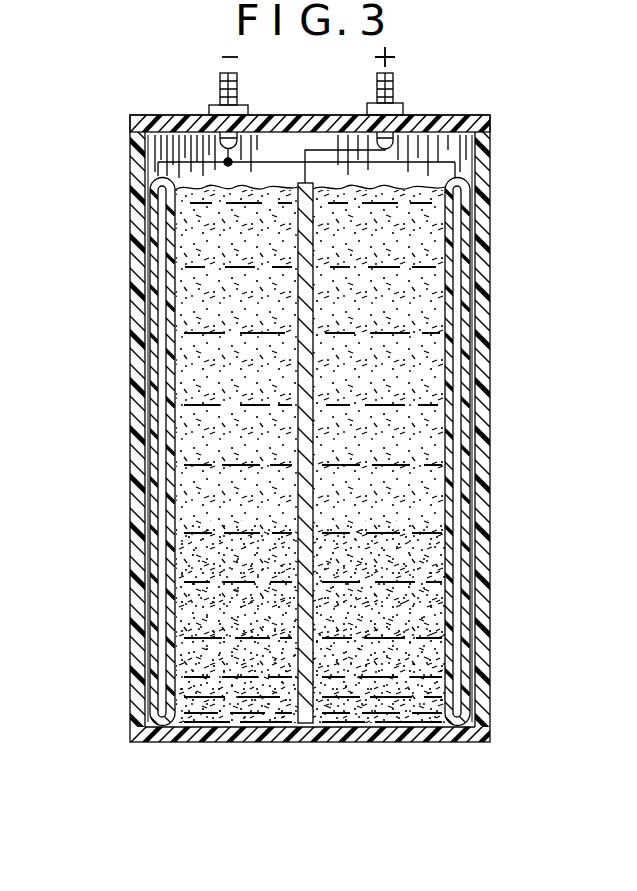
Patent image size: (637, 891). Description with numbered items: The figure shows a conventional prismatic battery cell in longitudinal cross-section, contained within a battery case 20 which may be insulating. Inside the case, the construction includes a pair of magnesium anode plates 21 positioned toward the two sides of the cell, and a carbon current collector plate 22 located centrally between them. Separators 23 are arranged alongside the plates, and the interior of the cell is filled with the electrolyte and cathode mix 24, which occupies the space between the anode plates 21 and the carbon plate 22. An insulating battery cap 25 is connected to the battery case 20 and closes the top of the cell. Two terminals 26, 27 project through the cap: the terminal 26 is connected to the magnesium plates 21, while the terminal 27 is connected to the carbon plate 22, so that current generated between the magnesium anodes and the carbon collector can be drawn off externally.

The battery case 20 is at (201, 742).
The magnesium anode plates 21 is at (167, 517).
The carbon current collector plate 22 is at (332, 700).
The separators 23 is at (147, 573).
The electrolyte and cathode mix 24 is at (200, 307).
The insulating battery cap 25 is at (453, 115).
The terminal 26 is at (237, 93).
The terminal 27 is at (392, 91).